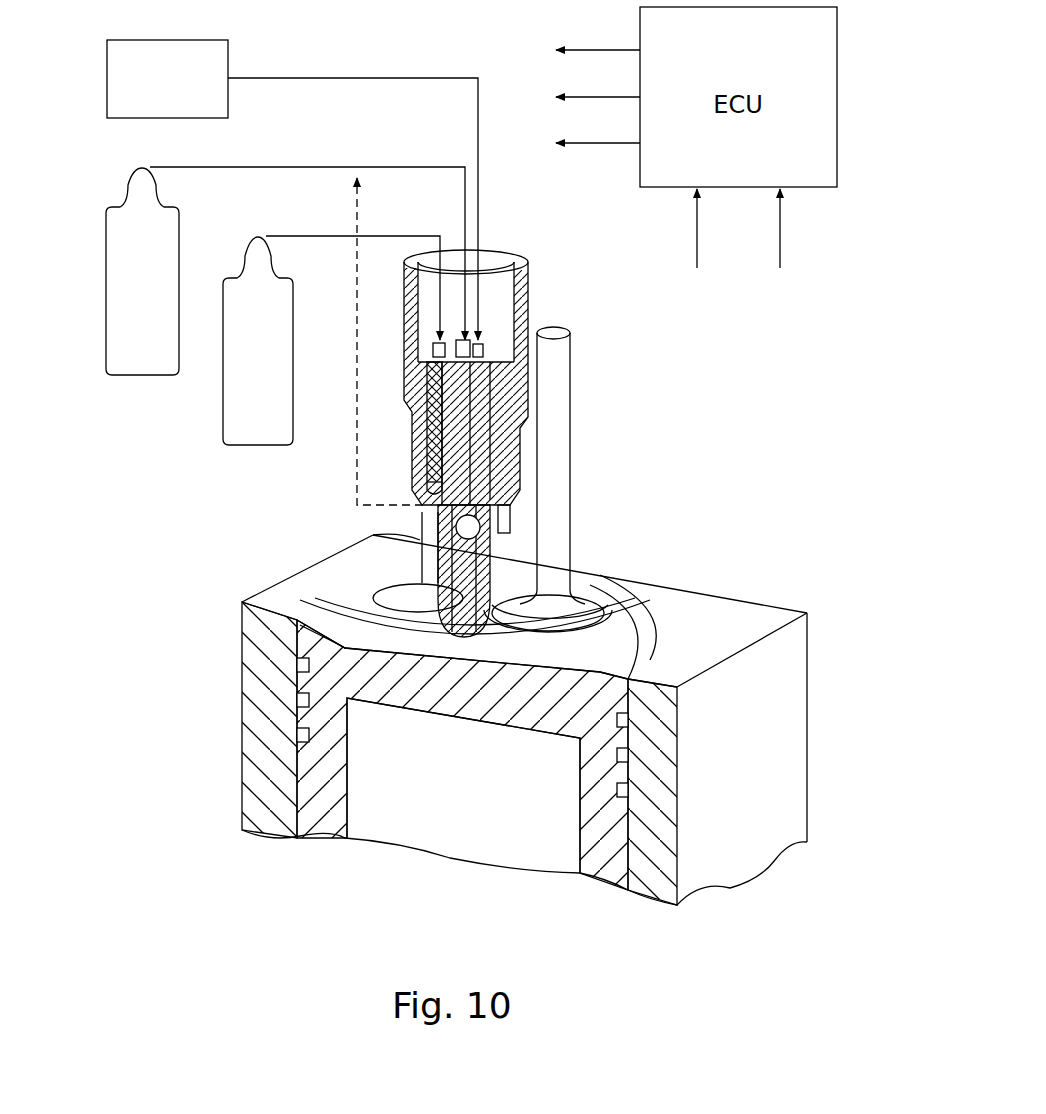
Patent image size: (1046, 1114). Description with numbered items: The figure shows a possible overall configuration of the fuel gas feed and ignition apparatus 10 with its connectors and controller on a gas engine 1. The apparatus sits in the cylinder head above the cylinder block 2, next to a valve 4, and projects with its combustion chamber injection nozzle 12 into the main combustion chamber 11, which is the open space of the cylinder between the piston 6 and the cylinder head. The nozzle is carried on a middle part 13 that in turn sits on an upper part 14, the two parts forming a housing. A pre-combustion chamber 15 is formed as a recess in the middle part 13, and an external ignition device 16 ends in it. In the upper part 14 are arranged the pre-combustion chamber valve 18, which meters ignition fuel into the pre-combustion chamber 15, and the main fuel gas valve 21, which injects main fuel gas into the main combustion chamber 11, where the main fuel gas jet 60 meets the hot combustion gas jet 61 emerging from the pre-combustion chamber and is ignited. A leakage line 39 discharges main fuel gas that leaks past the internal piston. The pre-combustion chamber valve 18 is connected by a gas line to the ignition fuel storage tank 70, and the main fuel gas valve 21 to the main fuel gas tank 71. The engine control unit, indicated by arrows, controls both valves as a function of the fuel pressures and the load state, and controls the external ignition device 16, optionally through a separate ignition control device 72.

The gas engine 1 is at (740, 486).
The cylinder block 2 is at (717, 632).
The valve 4 is at (550, 410).
The piston 6 is at (322, 790).
The fuel gas feed and ignition apparatus 10 is at (458, 397).
The main combustion chamber 11 is at (496, 650).
The combustion chamber injection nozzle 12 is at (548, 590).
The middle part 13 is at (490, 543).
The upper part 14 is at (500, 458).
The pre-combustion chamber 15 is at (505, 522).
The external ignition device 16 is at (490, 378).
The pre-combustion chamber valve 18 is at (480, 345).
The main fuel gas valve 21 is at (428, 485).
The leakage line 39 is at (357, 452).
The main fuel gas jet 60 is at (263, 597).
The combustion gas jet 61 is at (322, 645).
The ignition fuel storage tank 70 is at (150, 340).
The main fuel gas tank 71 is at (255, 400).
The ignition control device 72 is at (292, 190).